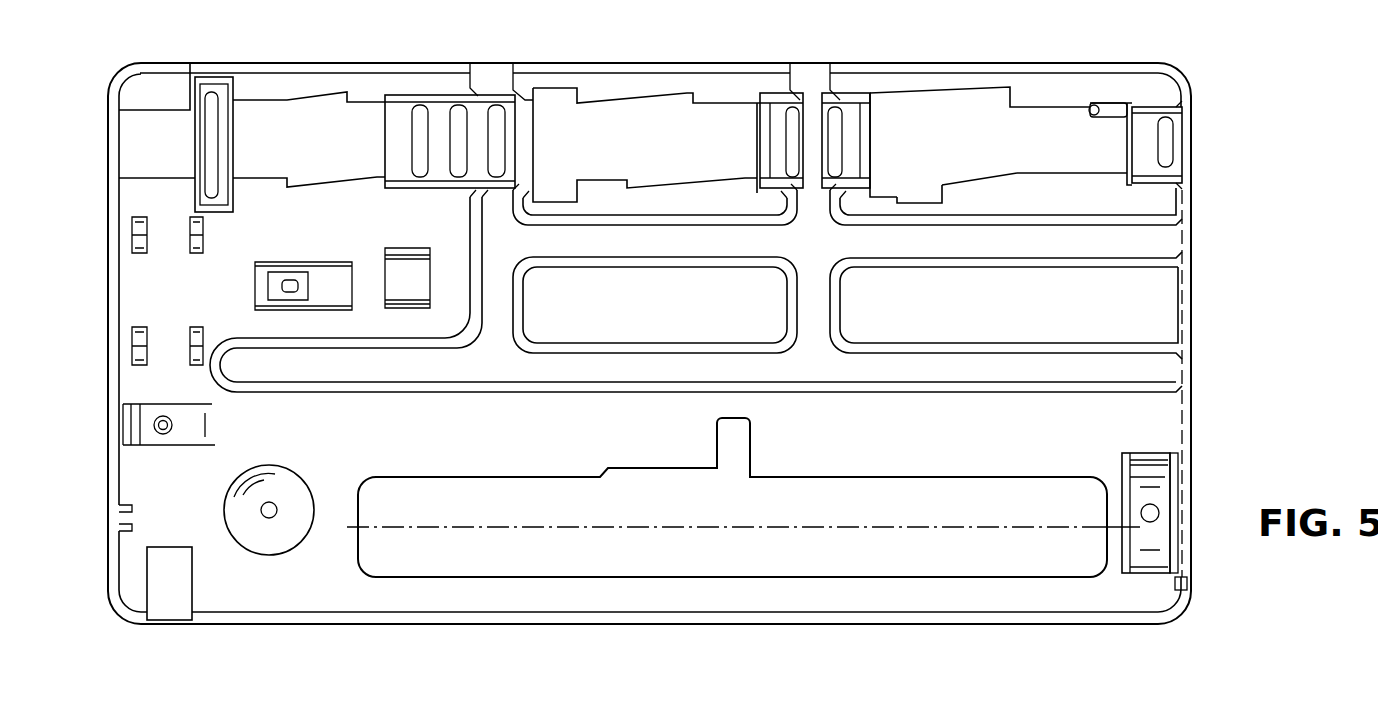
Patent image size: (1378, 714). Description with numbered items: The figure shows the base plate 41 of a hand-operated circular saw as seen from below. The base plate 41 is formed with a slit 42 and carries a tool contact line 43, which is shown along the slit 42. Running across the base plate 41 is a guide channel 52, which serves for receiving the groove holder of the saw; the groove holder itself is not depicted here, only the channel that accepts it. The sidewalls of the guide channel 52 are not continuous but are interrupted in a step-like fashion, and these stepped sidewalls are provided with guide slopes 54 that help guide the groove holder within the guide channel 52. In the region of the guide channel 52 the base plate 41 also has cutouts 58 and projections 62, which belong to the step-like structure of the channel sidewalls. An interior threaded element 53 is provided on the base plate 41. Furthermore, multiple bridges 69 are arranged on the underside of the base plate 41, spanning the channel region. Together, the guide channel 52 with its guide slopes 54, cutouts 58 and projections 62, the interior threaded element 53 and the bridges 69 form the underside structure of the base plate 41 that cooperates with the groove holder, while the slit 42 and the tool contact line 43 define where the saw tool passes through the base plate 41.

The base plate 41 is at (1197, 406).
The slit 42 is at (1037, 500).
The tool contact line 43 is at (900, 527).
The guide channel 52 is at (1088, 160).
The interior threaded element 53 is at (1115, 105).
The guide slopes 54 is at (305, 180).
The cutouts 58 is at (908, 200).
The projections 62 is at (605, 180).
The bridges 69 is at (218, 143).